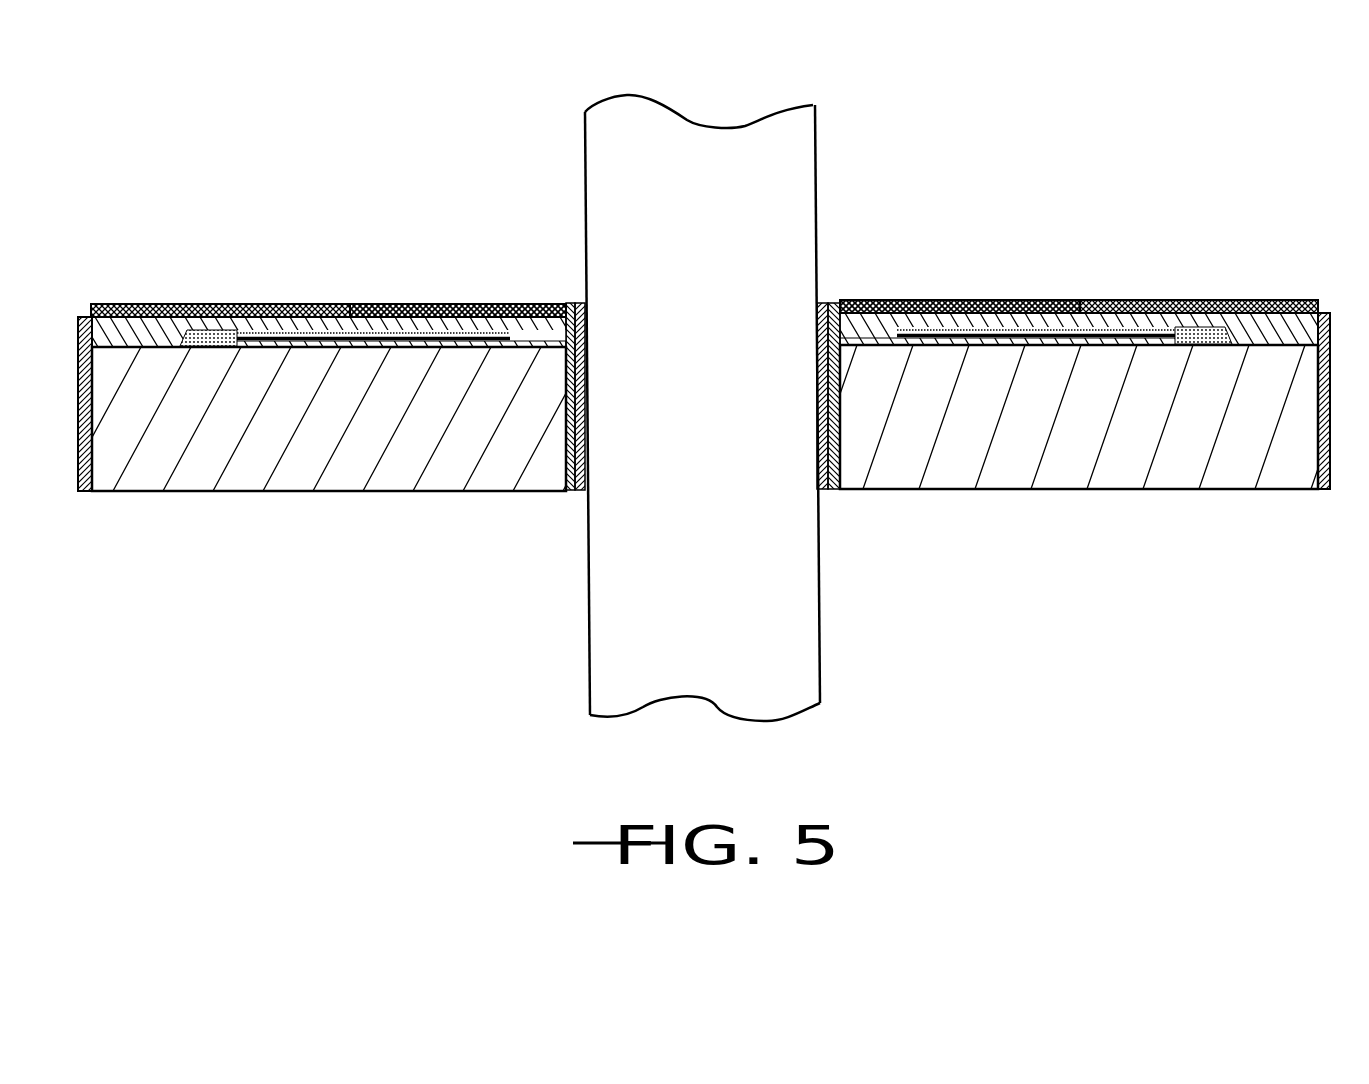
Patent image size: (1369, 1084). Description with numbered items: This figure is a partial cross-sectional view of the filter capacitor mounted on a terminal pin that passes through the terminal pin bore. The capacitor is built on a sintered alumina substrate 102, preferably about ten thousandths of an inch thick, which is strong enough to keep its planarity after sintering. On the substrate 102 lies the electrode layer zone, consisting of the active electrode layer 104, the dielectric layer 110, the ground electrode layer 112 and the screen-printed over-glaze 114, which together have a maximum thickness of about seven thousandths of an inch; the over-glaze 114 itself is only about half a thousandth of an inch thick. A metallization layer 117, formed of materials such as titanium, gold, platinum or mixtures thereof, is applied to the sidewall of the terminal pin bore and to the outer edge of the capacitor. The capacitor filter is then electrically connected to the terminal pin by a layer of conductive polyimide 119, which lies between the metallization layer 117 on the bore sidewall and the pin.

The substrate 102 is at (1153, 440).
The active electrode layer 104 is at (298, 348).
The dielectric layer 110 is at (207, 333).
The ground electrode layer 112 is at (118, 333).
The over-glaze 114 is at (440, 307).
The metallization layer 117 is at (78, 437).
The conductive polyimide 119 is at (815, 435).